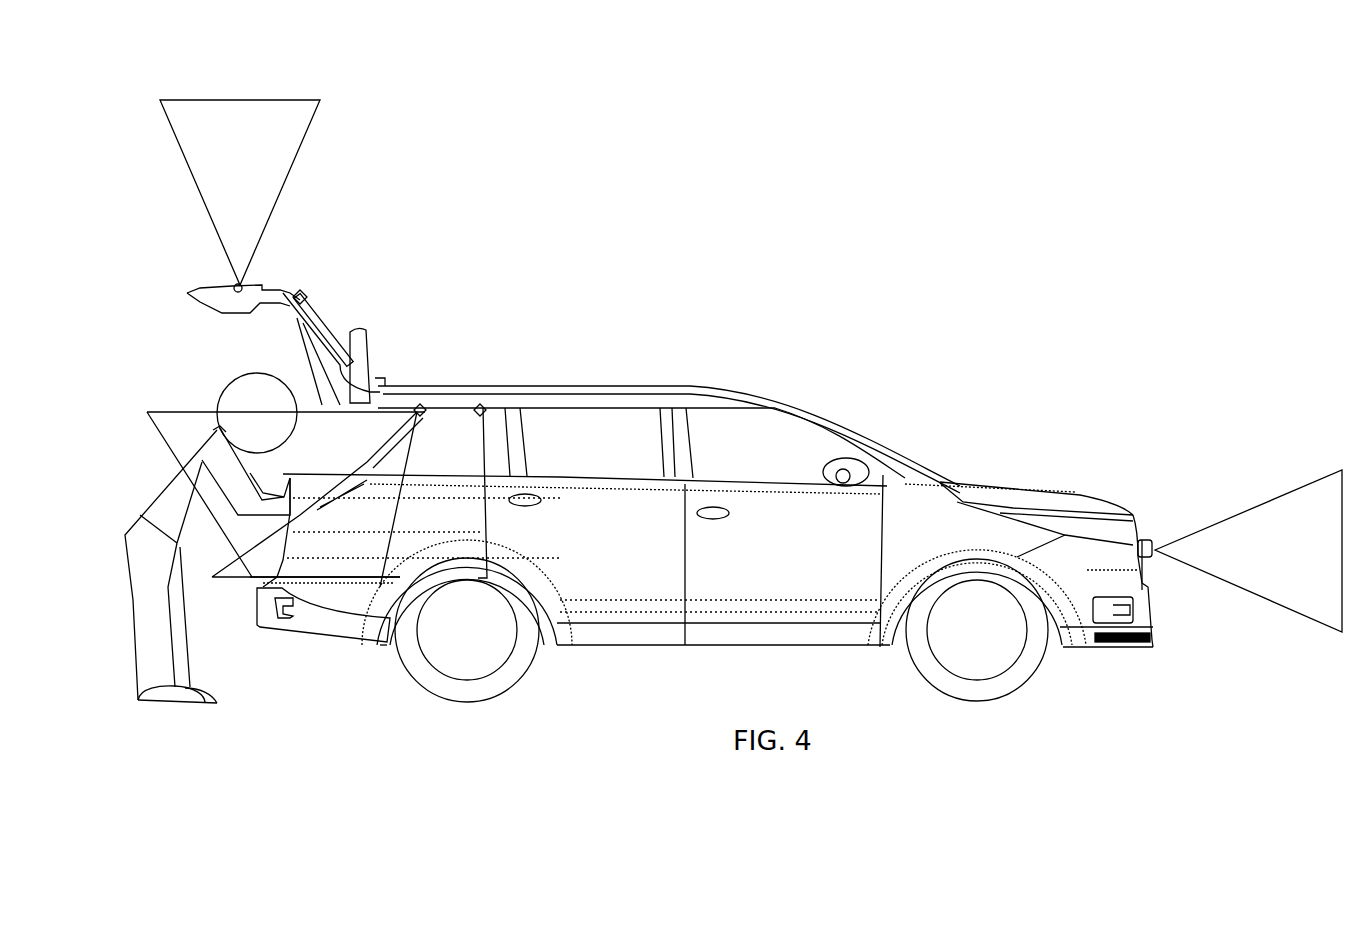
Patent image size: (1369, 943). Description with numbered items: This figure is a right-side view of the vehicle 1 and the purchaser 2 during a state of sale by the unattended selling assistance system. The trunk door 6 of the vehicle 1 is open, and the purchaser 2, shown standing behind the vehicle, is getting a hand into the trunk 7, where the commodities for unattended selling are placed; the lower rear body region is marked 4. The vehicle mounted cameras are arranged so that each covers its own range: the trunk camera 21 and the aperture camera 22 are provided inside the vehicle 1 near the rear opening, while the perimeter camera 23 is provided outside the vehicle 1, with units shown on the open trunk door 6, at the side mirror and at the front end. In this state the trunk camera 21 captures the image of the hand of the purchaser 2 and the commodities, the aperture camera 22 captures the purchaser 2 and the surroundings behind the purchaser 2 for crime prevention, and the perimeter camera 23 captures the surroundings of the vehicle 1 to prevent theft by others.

The vehicle 1 is at (895, 387).
The purchaser 2 is at (232, 382).
The vehicle body lower portion 4 is at (333, 570).
The trunk door 6 is at (325, 322).
The trunk 7 is at (338, 580).
The trunk camera 21 is at (480, 404).
The aperture camera 22 is at (420, 404).
The perimeter camera 23 is at (232, 289).